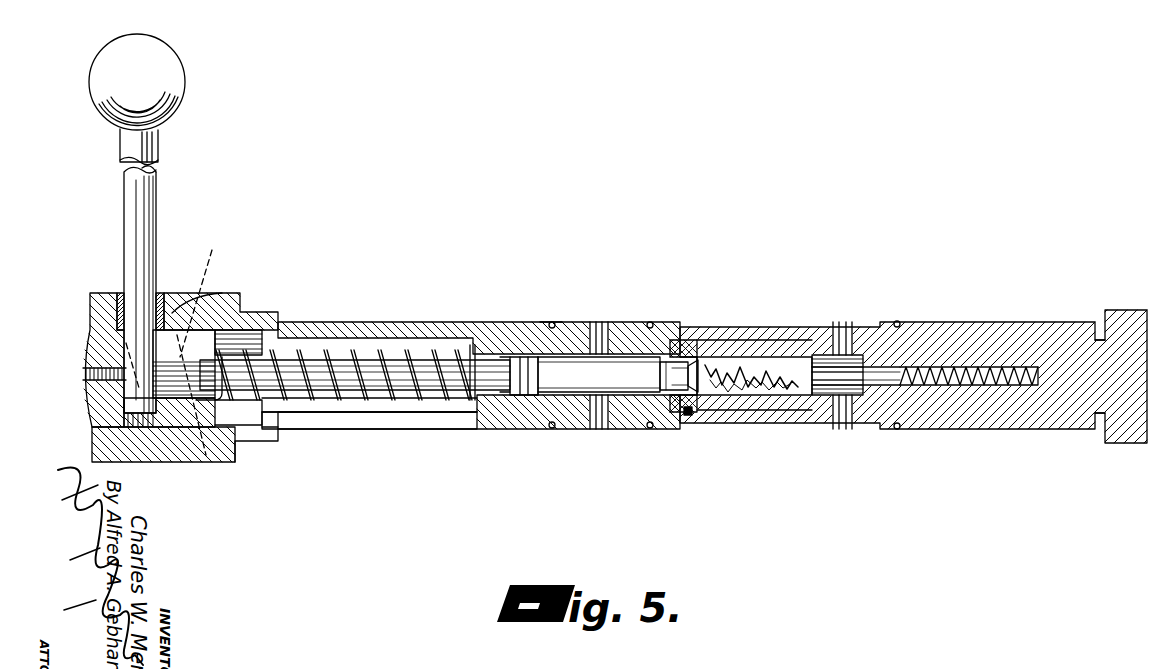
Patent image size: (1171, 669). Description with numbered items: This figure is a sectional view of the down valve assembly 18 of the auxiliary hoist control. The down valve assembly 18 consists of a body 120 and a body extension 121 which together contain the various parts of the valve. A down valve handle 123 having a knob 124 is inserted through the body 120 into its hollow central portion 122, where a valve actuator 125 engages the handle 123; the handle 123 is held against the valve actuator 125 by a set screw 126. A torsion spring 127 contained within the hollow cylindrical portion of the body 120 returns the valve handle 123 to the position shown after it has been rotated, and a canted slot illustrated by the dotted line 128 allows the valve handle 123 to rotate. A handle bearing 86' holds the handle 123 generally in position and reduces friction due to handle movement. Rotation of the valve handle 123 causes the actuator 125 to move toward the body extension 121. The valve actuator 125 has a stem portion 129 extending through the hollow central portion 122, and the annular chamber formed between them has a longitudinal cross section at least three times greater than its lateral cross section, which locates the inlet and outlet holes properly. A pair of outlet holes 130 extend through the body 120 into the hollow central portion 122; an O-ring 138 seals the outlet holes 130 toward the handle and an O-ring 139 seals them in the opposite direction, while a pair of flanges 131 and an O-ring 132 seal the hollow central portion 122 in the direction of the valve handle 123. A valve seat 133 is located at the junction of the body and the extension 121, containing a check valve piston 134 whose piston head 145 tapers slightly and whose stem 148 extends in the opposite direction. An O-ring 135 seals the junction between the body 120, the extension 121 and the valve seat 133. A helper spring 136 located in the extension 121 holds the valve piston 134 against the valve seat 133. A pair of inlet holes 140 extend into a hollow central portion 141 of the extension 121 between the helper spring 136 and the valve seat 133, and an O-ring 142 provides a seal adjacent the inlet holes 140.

The knob 124 is at (178, 57).
The down valve handle 123 is at (160, 192).
The handle bearing 86' is at (160, 280).
The canted slot 128 is at (202, 342).
The valve actuator 125 is at (228, 337).
The set screw 126 is at (84, 374).
The down valve assembly 18 is at (348, 298).
The body 120 is at (462, 322).
The outlet holes 130 is at (598, 330).
The O-ring 132 is at (554, 323).
The O-ring 138 is at (556, 330).
The O-ring 139 is at (650, 322).
The stem portion 129 is at (525, 395).
The hollow central portion 122 is at (622, 393).
The flanges 131 is at (533, 393).
The torsion spring 127 is at (463, 425).
The valve seat 133 is at (674, 358).
The piston head 145 is at (672, 392).
The O-ring 135 is at (688, 415).
The body extension 121 is at (787, 327).
The check valve piston 134 is at (735, 362).
The inlet holes 140 is at (845, 326).
The stem 148 is at (833, 380).
The hollow central portion 141 is at (860, 397).
The helper spring 136 is at (950, 372).
The O-ring 142 is at (899, 322).